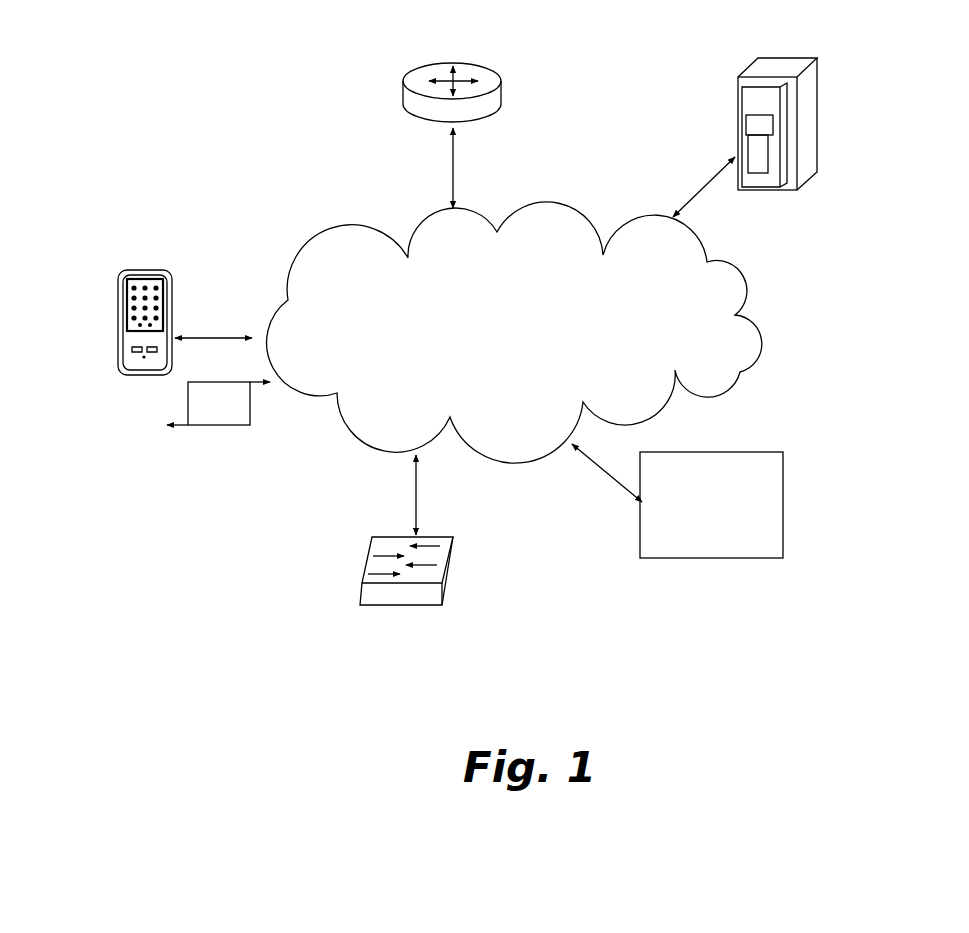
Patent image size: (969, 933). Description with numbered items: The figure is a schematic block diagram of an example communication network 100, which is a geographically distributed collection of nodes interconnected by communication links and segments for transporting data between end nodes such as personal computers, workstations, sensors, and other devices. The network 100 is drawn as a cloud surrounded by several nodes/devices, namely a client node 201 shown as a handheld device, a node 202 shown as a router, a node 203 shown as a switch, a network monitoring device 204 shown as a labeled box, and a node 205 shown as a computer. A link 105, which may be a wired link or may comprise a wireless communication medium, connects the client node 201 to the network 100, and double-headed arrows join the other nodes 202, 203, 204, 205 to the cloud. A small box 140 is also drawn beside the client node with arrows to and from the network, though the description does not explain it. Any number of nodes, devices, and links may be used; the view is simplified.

The communication network 100 is at (565, 283).
The link 105 is at (205, 338).
The access point / gateway 140 is at (240, 418).
The client node 201 is at (117, 293).
The node 202 is at (502, 85).
The node 203 is at (388, 537).
The network monitoring device 204 is at (740, 560).
The node 205 is at (798, 183).